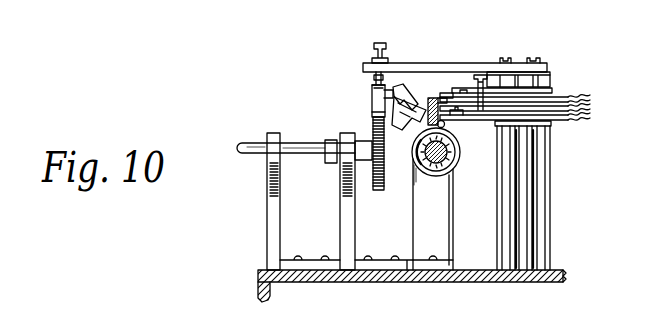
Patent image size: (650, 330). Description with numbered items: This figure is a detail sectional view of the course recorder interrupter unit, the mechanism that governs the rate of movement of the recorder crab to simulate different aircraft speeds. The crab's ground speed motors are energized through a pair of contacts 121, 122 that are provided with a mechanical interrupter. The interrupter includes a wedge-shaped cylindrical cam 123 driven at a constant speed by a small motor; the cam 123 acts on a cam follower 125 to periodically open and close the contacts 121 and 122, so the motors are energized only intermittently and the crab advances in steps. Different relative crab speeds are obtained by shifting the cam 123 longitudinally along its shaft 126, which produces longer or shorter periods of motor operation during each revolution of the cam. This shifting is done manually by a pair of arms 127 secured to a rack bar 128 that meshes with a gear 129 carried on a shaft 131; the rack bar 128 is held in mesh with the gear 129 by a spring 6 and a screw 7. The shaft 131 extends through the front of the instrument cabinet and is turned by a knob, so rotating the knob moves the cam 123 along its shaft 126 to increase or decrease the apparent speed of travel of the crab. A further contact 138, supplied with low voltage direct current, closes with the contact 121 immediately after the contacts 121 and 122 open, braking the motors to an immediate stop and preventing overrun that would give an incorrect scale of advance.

The spring 6 is at (484, 66).
The screw 7 is at (381, 46).
The contact 121 is at (436, 97).
The contact 122 is at (441, 98).
The wedge-shaped cylindrical cam 123 is at (458, 163).
The cam follower 125 is at (434, 99).
The shaft 126 is at (384, 183).
The arms 127 is at (404, 128).
The rack bar 128 is at (373, 101).
The gear 129 is at (363, 182).
The shaft 131 is at (253, 146).
The contact 138 is at (461, 121).